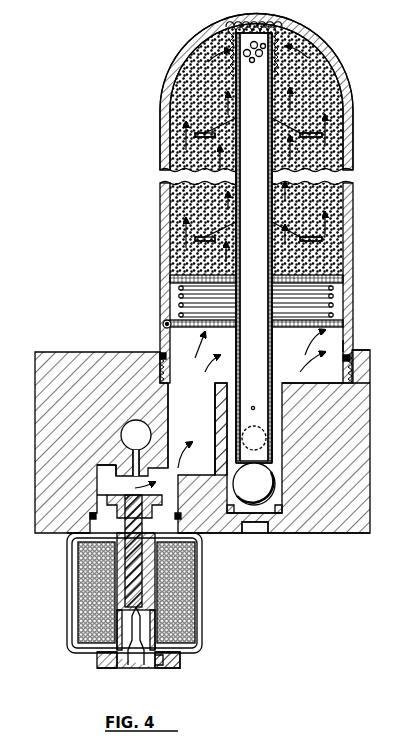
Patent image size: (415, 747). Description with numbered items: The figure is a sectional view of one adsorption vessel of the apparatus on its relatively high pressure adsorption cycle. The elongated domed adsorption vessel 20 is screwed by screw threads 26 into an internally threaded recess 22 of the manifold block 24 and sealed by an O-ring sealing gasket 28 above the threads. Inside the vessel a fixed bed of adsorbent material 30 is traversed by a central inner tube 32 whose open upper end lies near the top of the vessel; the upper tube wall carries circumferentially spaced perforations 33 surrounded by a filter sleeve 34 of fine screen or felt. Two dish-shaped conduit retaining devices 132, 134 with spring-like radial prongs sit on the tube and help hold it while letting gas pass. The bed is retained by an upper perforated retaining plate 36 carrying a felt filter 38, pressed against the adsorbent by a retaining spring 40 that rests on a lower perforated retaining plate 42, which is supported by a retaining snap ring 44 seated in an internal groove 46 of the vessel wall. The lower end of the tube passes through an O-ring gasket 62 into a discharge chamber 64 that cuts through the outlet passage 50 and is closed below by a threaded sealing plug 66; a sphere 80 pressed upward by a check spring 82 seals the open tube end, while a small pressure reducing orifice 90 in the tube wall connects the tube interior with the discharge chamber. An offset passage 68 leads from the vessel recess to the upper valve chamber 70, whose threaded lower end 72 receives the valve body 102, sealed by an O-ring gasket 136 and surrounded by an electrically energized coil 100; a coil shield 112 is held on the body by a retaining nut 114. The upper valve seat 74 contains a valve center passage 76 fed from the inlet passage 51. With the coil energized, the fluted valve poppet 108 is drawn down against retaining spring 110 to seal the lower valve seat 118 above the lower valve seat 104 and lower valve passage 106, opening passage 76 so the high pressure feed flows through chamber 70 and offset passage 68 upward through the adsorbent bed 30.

The adsorption vessel 20 is at (352, 136).
The internally threaded recess 22 is at (356, 386).
The manifold block 24 is at (371, 447).
The screw threads 26 is at (356, 363).
The O-ring sealing gasket 28 is at (349, 348).
The adsorbent material 30 is at (256, 149).
The inner tube 32 is at (306, 157).
The perforations 33 is at (268, 45).
The filter sleeve 34 is at (232, 37).
The upper perforated retaining plate 36 is at (336, 286).
The filter 38 is at (337, 277).
The retaining spring 40 is at (334, 312).
The lower perforated retaining plate 42 is at (168, 322).
The retaining snap ring 44 is at (163, 326).
The internal groove 46 is at (163, 331).
The outlet passage 50 is at (254, 438).
The inlet passage 51 is at (136, 448).
The O-ring gasket 62 is at (283, 385).
The discharge chamber 64 is at (227, 425).
The threaded sealing plug 66 is at (226, 536).
The offset passage 68 is at (193, 412).
The upper valve chamber 70 is at (100, 496).
The threaded lower end 72 is at (66, 533).
The upper valve seat 74 is at (100, 467).
The valve center passage 76 is at (118, 460).
The sphere 80 is at (254, 488).
The check spring 82 is at (283, 533).
The pressure reducing orifice 90 is at (252, 406).
The electrically energized coil 100 is at (78, 630).
The valve body 102 is at (80, 563).
The lower valve seat 104 is at (100, 662).
The lower valve passage 106 is at (132, 668).
The valve poppet 108 is at (140, 496).
The retaining spring 110 is at (88, 514).
The coil shield 112 is at (70, 600).
The retaining nut 114 is at (170, 661).
The lower valve seat 118 is at (145, 606).
The conduit retaining device 132 is at (260, 242).
The conduit retaining device 134 is at (259, 118).
The O-ring gasket 136 is at (203, 545).